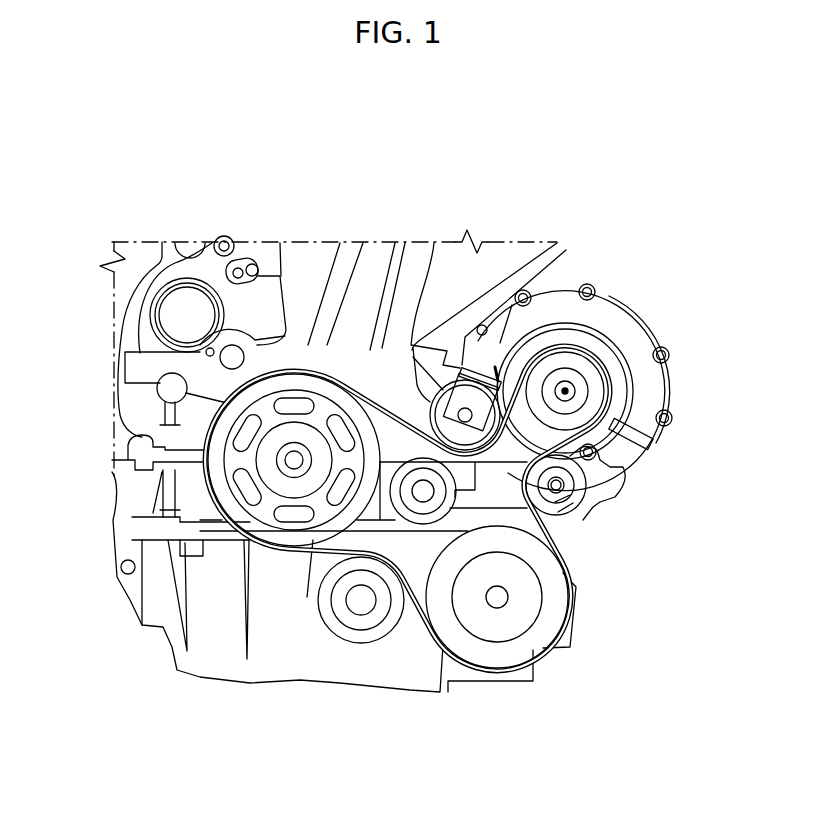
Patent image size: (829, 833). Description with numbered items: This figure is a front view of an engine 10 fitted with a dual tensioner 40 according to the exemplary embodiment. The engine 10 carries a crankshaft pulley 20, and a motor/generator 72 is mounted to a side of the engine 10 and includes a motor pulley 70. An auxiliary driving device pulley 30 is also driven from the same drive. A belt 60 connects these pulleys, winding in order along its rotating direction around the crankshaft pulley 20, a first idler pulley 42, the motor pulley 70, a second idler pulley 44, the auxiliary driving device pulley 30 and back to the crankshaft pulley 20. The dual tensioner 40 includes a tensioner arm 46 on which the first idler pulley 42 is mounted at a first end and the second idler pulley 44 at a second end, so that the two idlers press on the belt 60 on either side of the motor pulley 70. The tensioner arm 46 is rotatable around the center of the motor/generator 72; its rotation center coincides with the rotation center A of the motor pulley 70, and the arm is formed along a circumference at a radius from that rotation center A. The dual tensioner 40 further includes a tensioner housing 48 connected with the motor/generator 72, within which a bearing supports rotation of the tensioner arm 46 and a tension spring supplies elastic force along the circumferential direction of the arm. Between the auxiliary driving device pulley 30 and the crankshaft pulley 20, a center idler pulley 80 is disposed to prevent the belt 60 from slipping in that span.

The engine 10 is at (404, 712).
The crankshaft pulley 20 is at (262, 460).
The auxiliary driving device pulley 30 is at (533, 643).
The dual tensioner 40 is at (678, 454).
The first idler pulley 42 is at (434, 243).
The second idler pulley 44 is at (566, 492).
The tensioner arm 46 is at (622, 455).
The tensioner housing 48 is at (650, 388).
The belt 60 is at (307, 597).
The motor pulley 70 is at (577, 362).
The motor/generator 72 is at (508, 452).
The center idler pulley 80 is at (359, 645).
The rotation center of the motor pulley A is at (565, 391).